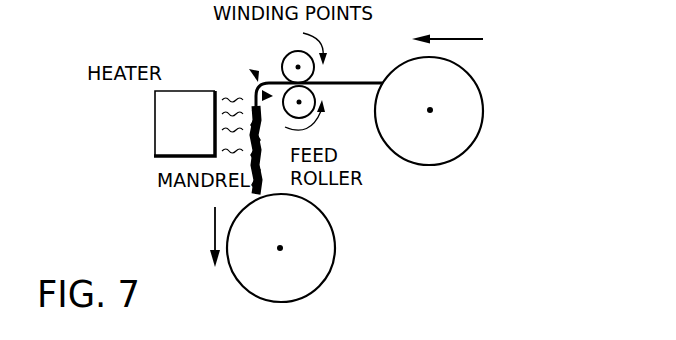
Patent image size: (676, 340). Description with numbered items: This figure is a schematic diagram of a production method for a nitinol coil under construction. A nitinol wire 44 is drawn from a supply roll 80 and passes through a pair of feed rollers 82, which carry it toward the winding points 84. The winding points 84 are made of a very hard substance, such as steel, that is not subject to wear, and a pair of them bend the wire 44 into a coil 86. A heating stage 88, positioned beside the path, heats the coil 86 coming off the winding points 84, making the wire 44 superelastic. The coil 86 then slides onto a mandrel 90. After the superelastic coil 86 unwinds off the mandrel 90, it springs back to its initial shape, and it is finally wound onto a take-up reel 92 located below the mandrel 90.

The supply roll 80 is at (458, 76).
The nitinol wire 44 is at (338, 86).
The feed rollers 82 is at (316, 46).
The winding points 84 is at (257, 86).
The coil 86 is at (253, 112).
The heating stage 88 is at (155, 141).
The mandrel 90 is at (263, 191).
The take-up reel 92 is at (245, 265).